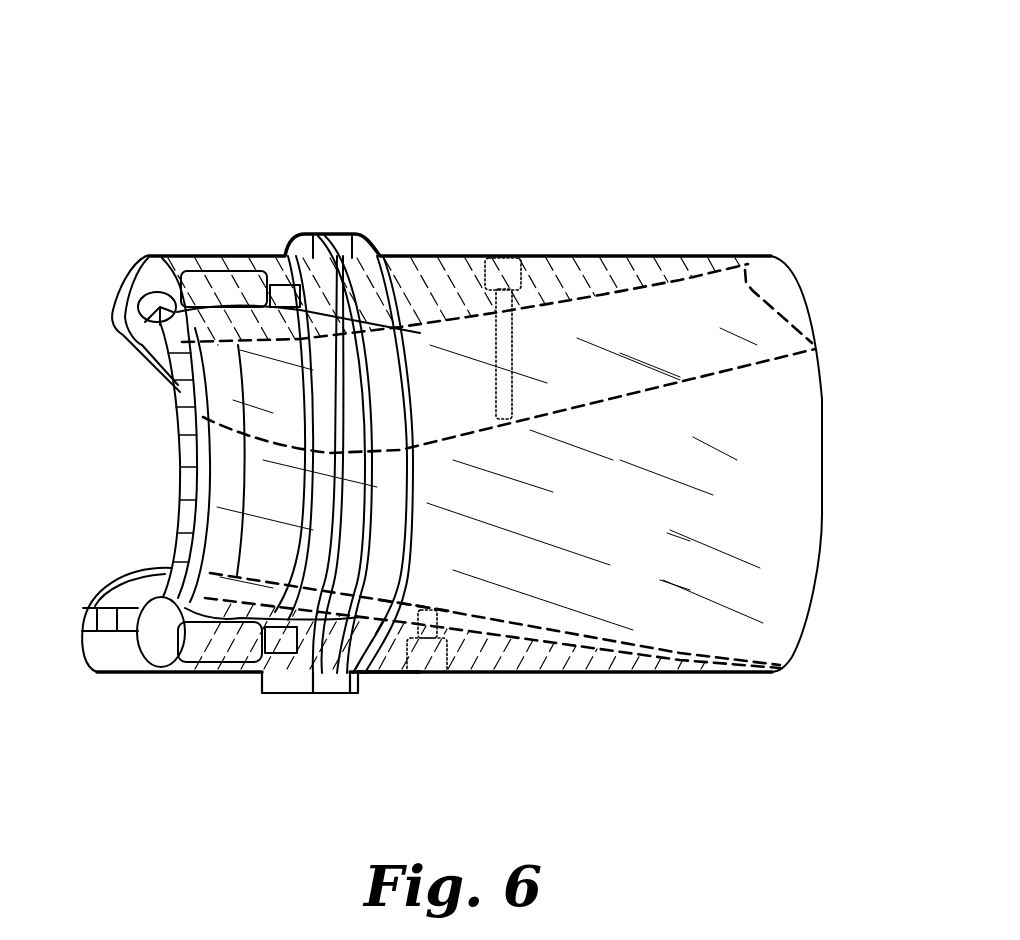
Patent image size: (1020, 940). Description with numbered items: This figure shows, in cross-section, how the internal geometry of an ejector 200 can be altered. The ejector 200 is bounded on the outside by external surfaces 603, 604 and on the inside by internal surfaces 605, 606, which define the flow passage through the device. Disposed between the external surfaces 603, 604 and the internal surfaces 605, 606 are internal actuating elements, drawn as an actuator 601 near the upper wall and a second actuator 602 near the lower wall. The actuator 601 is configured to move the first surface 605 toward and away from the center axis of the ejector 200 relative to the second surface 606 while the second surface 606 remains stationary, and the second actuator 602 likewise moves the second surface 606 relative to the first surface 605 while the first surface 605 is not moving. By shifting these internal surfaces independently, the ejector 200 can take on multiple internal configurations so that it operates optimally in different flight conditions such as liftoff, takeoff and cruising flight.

The ejector 200 is at (185, 135).
The actuator 601 is at (501, 250).
The second actuator 602 is at (432, 676).
The external surface 603 is at (390, 256).
The external surface 604 is at (384, 690).
The first surface 605 is at (784, 360).
The second surface 606 is at (415, 603).